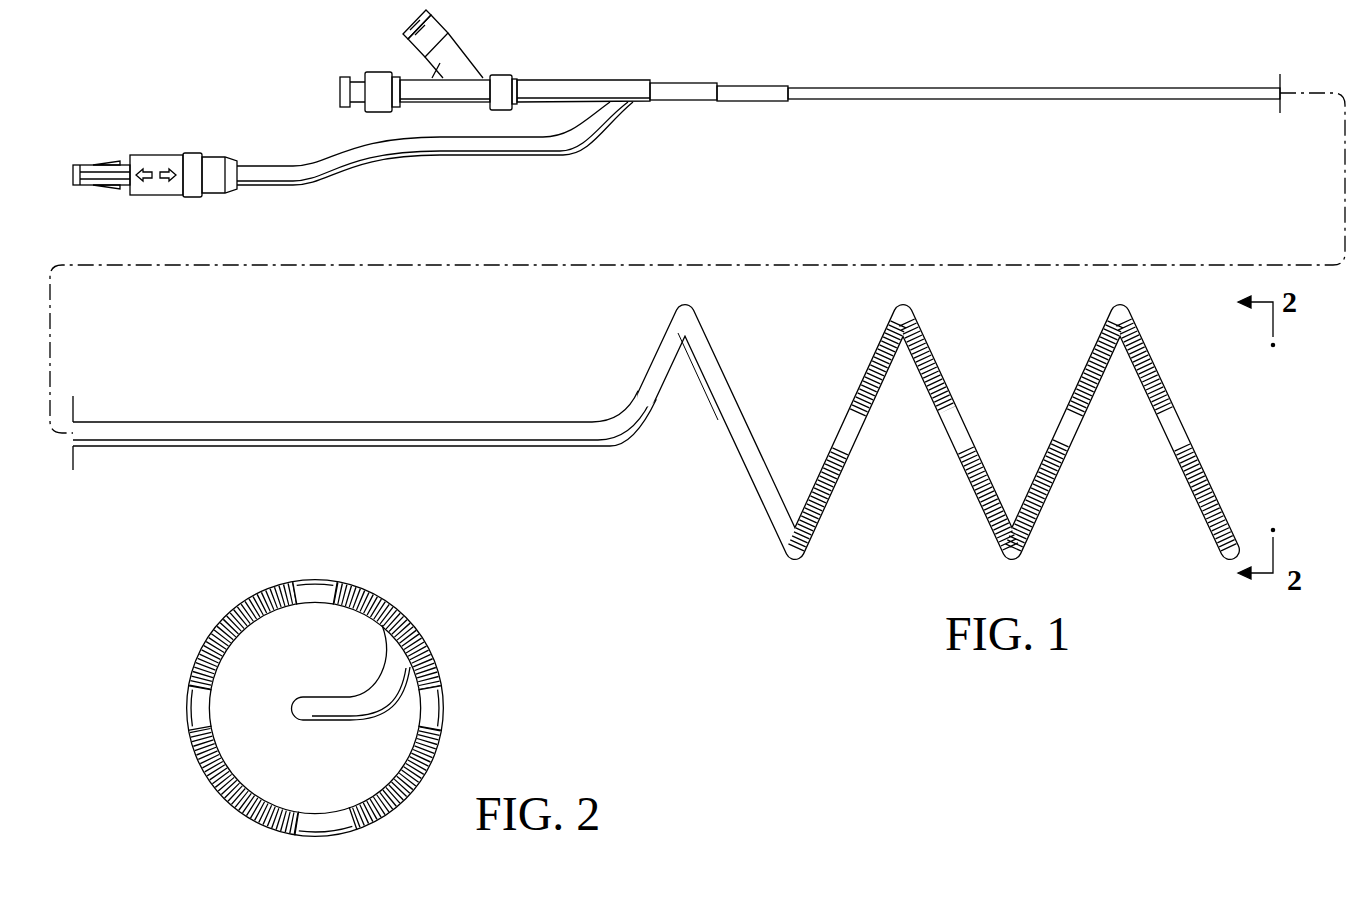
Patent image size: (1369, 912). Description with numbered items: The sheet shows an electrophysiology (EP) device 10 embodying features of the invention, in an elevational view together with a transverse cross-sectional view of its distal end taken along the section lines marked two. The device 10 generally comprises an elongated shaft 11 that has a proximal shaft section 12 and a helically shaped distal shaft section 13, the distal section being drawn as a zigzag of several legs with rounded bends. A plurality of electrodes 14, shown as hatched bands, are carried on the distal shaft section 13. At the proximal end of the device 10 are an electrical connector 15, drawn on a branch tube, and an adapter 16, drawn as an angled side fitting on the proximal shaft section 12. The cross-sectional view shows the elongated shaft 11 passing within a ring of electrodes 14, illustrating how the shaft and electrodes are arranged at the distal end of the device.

In FIG. 1, the EP device 10 is at (1015, 58).
In FIG. 1, the elongated shaft 11 is at (1188, 88).
In FIG. 2, the elongated shaft 11 is at (312, 697).
In FIG. 1, the proximal shaft section 12 is at (808, 86).
In FIG. 1, the helically shaped distal shaft section 13 is at (676, 309).
In FIG. 1, the electrodes 14 is at (946, 369).
In FIG. 2, the electrodes 14 is at (417, 623).
In FIG. 1, the electrical connector 15 is at (162, 156).
In FIG. 1, the adapter 16 is at (468, 77).